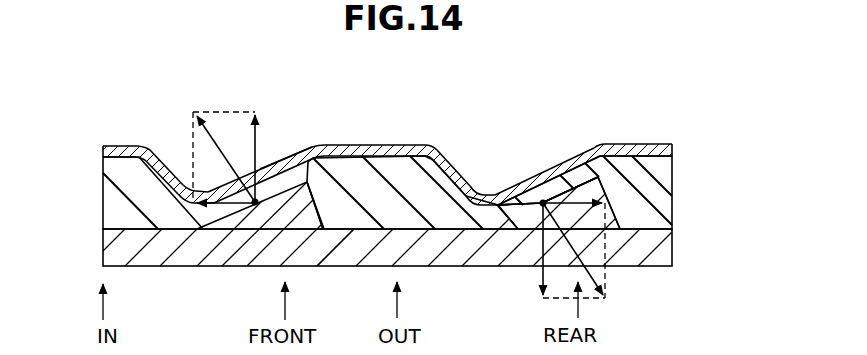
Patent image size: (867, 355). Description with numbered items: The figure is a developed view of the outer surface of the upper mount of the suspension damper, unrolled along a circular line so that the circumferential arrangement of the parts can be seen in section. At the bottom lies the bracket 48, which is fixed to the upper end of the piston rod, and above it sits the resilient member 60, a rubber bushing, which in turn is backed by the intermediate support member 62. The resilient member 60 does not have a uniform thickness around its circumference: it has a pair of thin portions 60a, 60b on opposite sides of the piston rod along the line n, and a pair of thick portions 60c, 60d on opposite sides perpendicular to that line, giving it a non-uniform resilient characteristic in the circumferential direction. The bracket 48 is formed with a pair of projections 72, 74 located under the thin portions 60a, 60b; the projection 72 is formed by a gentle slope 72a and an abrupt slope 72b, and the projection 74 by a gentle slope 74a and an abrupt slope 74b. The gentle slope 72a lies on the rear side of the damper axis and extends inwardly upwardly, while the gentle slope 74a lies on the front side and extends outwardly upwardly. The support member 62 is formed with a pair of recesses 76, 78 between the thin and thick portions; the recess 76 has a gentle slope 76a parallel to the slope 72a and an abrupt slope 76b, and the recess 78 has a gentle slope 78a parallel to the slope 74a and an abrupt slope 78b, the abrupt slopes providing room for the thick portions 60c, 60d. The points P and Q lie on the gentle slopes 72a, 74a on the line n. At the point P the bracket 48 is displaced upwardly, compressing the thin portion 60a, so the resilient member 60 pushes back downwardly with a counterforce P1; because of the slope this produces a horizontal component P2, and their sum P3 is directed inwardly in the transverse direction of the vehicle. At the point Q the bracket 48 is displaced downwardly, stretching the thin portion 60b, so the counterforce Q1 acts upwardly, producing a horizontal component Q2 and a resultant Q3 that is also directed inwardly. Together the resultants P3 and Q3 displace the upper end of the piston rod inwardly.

The bracket 48 is at (665, 243).
The resilient member 60 is at (383, 202).
The thin portion 60a is at (550, 186).
The thin portion 60b is at (267, 190).
The thick portion 60c is at (113, 213).
The thick portion 60d is at (386, 170).
The support member 62 is at (668, 142).
The projection 72 is at (592, 172).
The gentle slope 72a is at (578, 176).
The abrupt slope 72b is at (672, 145).
The projection 74 is at (313, 215).
The gentle slope 74a is at (292, 152).
The abrupt slope 74b is at (318, 205).
The recess 76 is at (487, 157).
The gentle slope 76a is at (552, 157).
The abrupt slope 76b is at (462, 160).
The recess 78 is at (176, 152).
The gentle slope 78a is at (272, 152).
The abrupt slope 78b is at (160, 140).
The point Q is at (254, 205).
The counterforce Q1 is at (243, 110).
The horizontal component force Q2 is at (198, 210).
The resultant counterforce Q3 is at (217, 110).
The point P is at (497, 250).
The counterforce P1 is at (533, 252).
The horizontal component force P2 is at (598, 177).
The resultant counterforce P3 is at (595, 272).